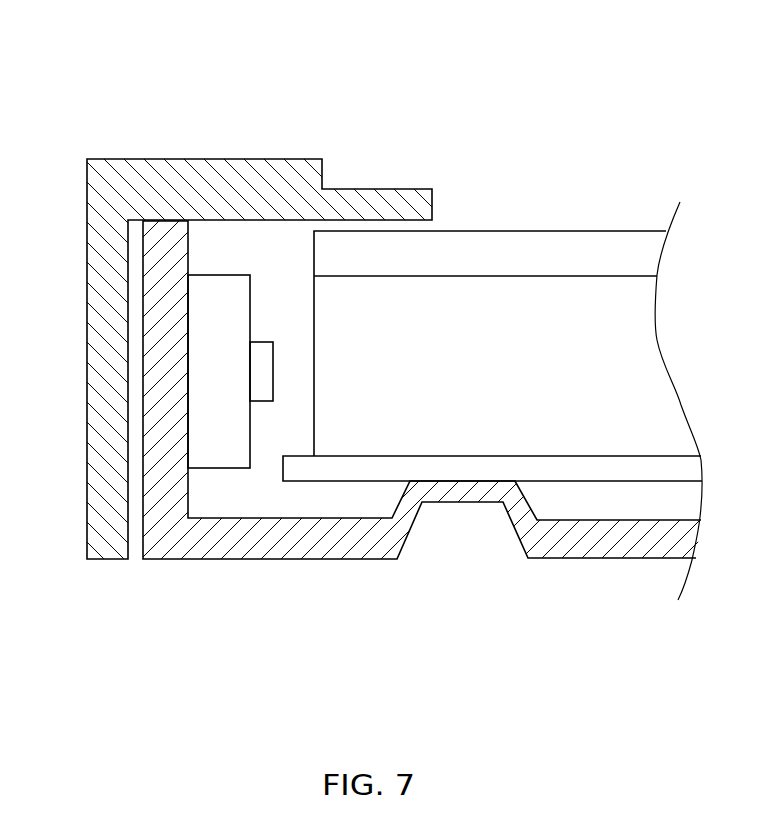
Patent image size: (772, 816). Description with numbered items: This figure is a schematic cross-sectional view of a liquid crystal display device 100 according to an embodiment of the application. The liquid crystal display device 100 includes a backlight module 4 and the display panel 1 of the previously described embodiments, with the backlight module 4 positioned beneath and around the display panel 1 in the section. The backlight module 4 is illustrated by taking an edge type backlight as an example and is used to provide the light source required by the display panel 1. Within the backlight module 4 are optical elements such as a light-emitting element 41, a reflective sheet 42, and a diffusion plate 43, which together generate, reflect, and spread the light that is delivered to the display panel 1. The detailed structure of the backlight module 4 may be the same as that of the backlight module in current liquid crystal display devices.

The liquid crystal display device 100 is at (116, 58).
The backlight module 4 is at (146, 156).
The display panel 1 is at (530, 226).
The light-emitting element 41 is at (258, 403).
The reflective sheet 42 is at (455, 457).
The diffusion plate 43 is at (313, 363).